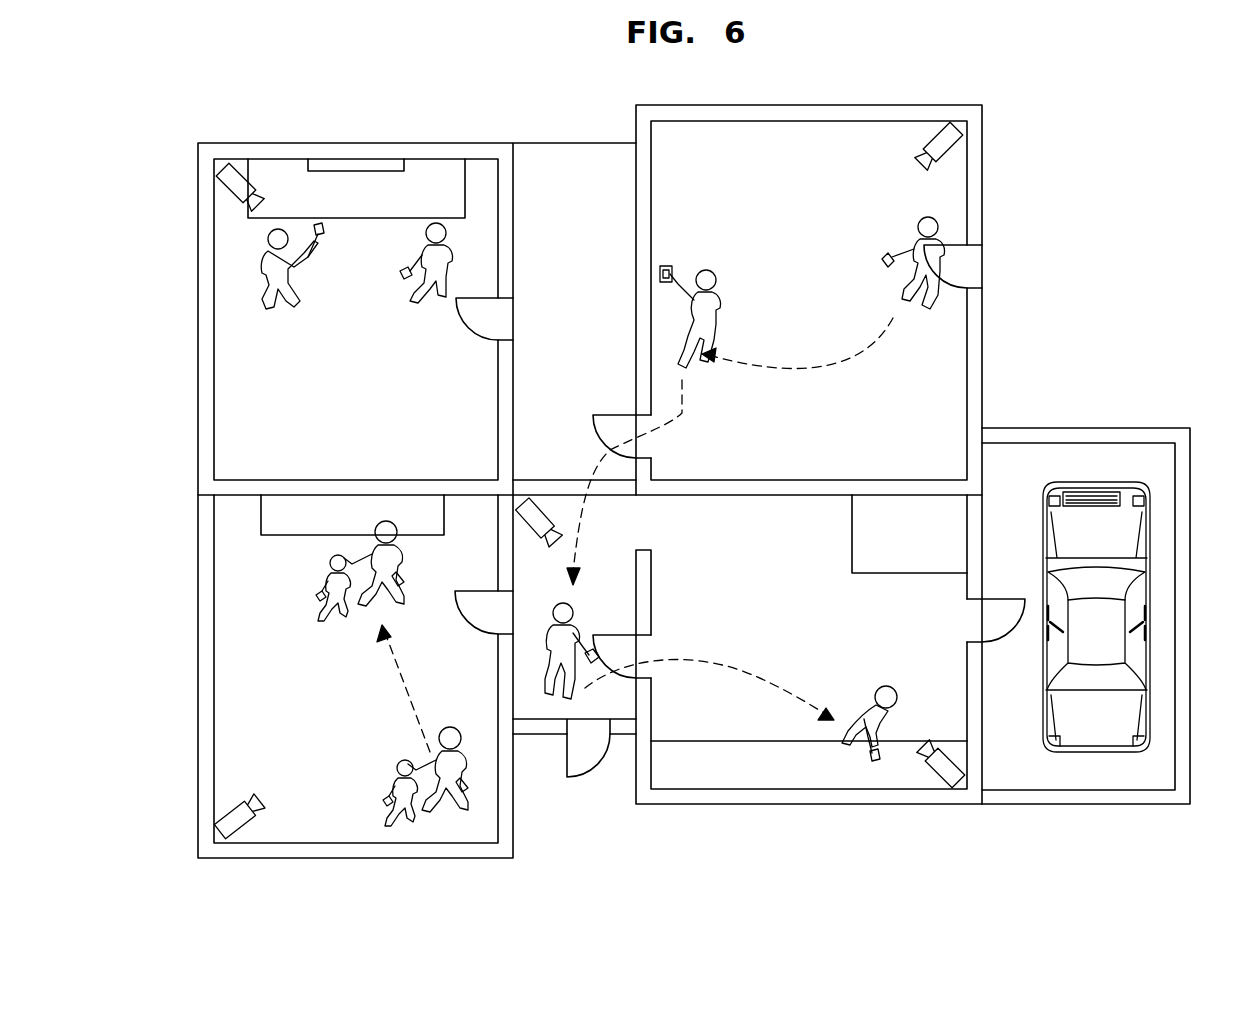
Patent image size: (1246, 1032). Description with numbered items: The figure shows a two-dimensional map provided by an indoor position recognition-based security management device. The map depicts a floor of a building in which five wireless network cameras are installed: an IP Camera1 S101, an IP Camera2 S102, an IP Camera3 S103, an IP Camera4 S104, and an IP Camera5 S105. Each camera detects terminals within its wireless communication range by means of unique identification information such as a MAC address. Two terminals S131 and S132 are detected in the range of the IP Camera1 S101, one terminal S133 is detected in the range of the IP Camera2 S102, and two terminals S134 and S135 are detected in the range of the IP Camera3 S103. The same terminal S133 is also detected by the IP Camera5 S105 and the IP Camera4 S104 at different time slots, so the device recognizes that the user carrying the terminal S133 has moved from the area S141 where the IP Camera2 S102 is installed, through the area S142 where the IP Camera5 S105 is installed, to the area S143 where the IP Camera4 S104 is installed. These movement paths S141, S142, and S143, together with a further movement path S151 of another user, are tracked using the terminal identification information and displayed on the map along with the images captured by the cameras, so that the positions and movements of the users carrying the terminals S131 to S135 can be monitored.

The IP Camera1 S101 is at (228, 187).
The IP Camera2 S102 is at (950, 142).
The IP Camera3 S103 is at (230, 817).
The IP Camera4 S104 is at (947, 770).
The IP Camera5 S105 is at (535, 513).
The terminal S131 is at (321, 222).
The terminal S132 is at (403, 277).
The terminal S133 is at (885, 258).
The terminal S134 is at (467, 787).
The terminal S135 is at (390, 795).
The area S141 is at (805, 382).
The area S142 is at (582, 513).
The area S143 is at (723, 666).
The movement path S151 is at (407, 688).